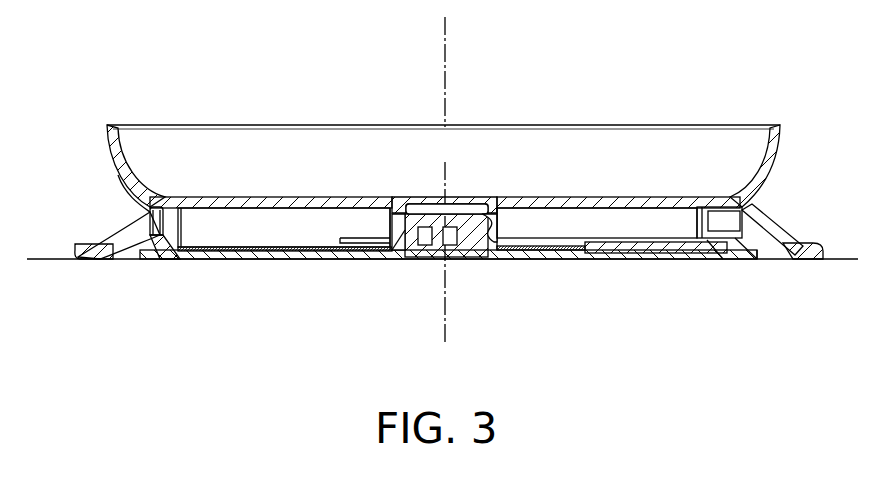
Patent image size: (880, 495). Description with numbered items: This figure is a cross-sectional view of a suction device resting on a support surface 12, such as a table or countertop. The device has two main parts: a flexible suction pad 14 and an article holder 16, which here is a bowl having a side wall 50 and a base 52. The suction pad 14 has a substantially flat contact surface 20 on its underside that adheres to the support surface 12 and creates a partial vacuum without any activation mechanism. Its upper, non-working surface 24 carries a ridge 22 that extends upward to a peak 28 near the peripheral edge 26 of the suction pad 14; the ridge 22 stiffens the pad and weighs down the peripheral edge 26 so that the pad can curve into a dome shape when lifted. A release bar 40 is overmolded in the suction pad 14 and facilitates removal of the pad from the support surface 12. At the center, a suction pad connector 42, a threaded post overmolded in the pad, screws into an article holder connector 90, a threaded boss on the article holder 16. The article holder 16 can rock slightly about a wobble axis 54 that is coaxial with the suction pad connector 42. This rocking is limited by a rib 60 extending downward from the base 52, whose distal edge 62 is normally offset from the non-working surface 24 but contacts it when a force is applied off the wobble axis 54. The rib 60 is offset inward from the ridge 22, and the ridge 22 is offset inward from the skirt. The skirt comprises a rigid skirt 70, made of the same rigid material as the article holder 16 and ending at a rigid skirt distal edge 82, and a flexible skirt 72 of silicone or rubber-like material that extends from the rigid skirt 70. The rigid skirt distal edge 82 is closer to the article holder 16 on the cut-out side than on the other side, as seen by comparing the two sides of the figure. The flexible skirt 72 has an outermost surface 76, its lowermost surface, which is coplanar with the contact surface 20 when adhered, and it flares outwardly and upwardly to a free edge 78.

The support surface 12 is at (48, 258).
The suction pad 14 is at (223, 259).
The article holder 16 is at (187, 125).
The contact surface 20 is at (285, 258).
The ridge 22 is at (140, 259).
The non-working surface 24 is at (311, 247).
The peripheral edge 26 is at (757, 260).
The peak 28 is at (127, 246).
The release bar 40 is at (622, 259).
The suction pad connector 42 is at (476, 258).
The side wall 50 is at (106, 142).
The base 52 is at (286, 200).
The wobble axis 54 is at (448, 55).
The rib 60 is at (145, 220).
The distal edge 62 is at (172, 258).
The rigid skirt 70 is at (137, 230).
The flexible skirt 72 is at (770, 226).
The outermost surface 76 is at (796, 260).
The free edge 78 is at (812, 252).
The rigid skirt distal edge 82 is at (757, 215).
The article holder connector 90 is at (496, 224).